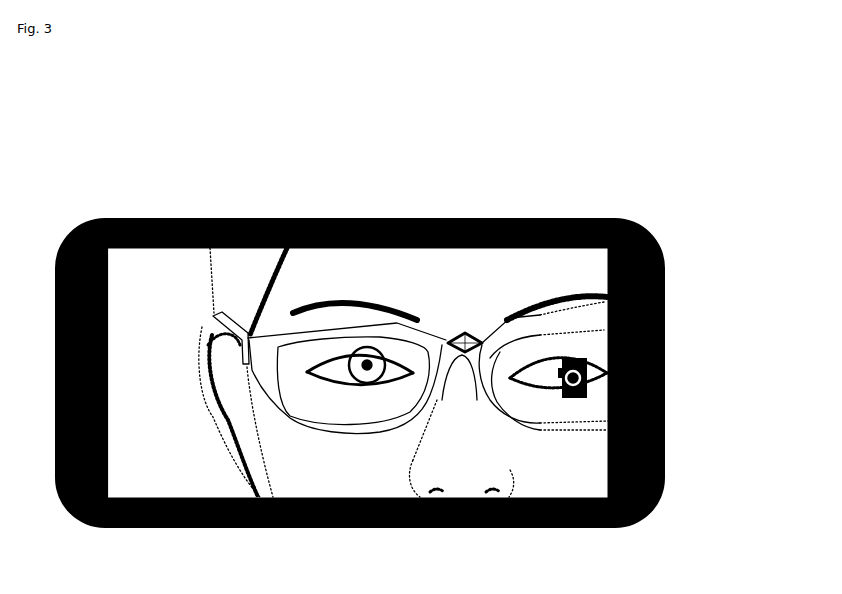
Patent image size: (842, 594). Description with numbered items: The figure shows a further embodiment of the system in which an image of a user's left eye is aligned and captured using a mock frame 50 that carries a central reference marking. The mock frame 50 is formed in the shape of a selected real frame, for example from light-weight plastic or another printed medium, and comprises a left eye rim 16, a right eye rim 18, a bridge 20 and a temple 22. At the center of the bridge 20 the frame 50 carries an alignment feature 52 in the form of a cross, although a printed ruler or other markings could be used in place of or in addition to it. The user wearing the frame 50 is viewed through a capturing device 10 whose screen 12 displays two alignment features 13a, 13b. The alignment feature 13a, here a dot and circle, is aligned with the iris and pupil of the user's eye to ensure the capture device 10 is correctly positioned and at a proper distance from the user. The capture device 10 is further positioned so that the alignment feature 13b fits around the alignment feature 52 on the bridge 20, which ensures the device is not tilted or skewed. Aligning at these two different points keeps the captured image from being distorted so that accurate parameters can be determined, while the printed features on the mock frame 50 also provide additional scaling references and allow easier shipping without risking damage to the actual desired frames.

The capturing device 10 is at (672, 283).
The screen 12 is at (190, 267).
The alignment feature 13a is at (349, 367).
The alignment feature 13b is at (446, 337).
The left eye rim 16 is at (300, 433).
The right eye rim 18 is at (525, 427).
The bridge 20 is at (463, 360).
The temple 22 is at (245, 340).
The mock frame 50 is at (465, 314).
The alignment feature 52 is at (462, 337).